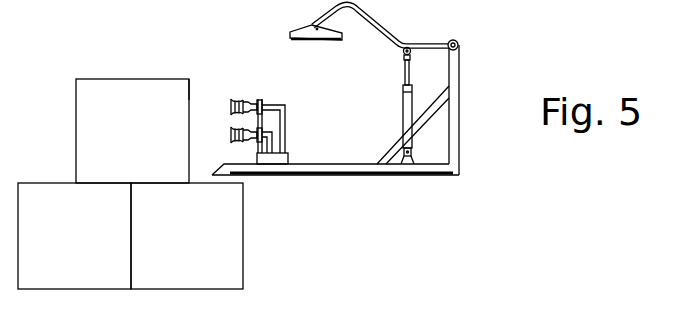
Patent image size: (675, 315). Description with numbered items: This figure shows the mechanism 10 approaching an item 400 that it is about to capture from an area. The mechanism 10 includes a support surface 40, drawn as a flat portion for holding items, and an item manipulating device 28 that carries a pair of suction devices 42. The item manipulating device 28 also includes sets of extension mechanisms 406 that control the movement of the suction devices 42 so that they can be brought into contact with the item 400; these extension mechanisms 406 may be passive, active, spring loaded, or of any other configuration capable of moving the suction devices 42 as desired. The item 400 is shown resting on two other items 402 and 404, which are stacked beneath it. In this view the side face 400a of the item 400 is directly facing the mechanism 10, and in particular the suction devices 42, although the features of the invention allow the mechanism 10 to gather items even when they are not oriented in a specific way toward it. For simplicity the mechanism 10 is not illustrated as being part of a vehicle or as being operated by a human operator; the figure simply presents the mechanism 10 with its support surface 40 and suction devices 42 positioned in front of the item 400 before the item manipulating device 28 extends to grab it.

The mechanism 10 is at (460, 62).
The item manipulating device 28 is at (262, 108).
The support surface 40 is at (343, 170).
The suction devices 42 is at (239, 98).
The item 400 is at (113, 141).
The side face 400a is at (189, 88).
The item 402 is at (55, 247).
The item 404 is at (167, 247).
The extension mechanisms 406 is at (272, 143).